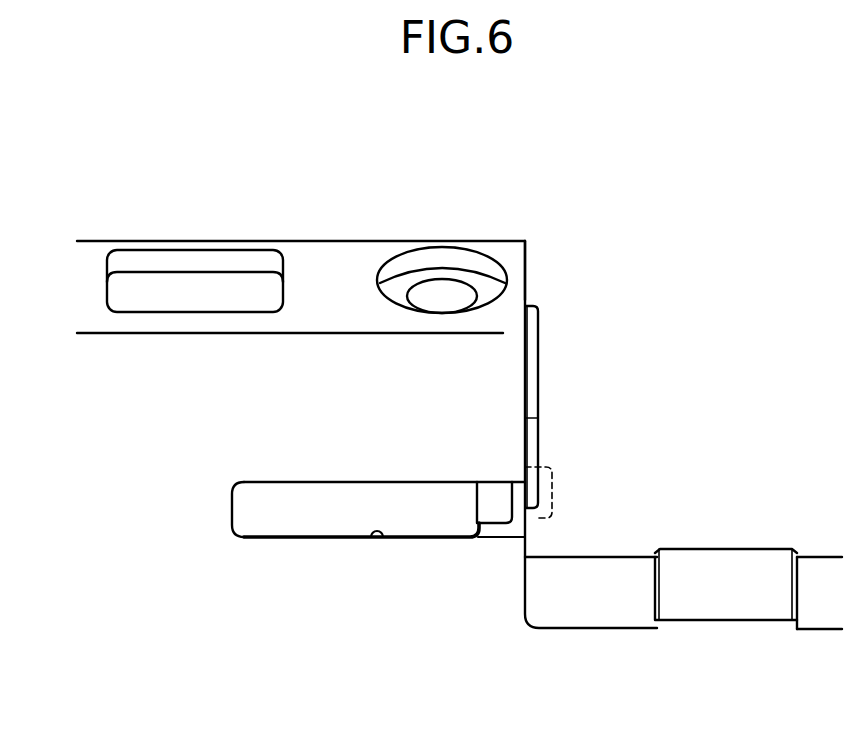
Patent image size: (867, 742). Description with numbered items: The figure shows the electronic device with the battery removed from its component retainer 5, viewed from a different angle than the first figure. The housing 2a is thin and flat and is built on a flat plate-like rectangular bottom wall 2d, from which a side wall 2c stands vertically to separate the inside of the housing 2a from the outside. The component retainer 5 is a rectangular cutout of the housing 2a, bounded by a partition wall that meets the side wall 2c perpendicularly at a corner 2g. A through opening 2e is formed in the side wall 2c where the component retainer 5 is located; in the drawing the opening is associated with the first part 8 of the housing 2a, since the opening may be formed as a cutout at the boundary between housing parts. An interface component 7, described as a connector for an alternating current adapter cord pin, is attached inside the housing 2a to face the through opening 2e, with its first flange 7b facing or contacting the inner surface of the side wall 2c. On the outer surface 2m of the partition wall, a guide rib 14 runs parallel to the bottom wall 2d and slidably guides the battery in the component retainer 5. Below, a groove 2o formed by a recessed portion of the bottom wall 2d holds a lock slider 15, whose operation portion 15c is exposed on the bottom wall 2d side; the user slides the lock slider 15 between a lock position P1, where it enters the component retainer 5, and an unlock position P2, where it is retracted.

The housing 2a is at (643, 222).
The side wall 2c is at (335, 262).
The through opening 2e is at (218, 262).
The corner 2g is at (527, 272).
The outer surface of partition wall 2m is at (527, 418).
The bottom wall 2d is at (695, 682).
The groove 2o is at (380, 545).
The component retainer 5 is at (720, 437).
The interface component 7 is at (427, 272).
The first flange 7b is at (451, 277).
The first part 8 is at (123, 239).
The guide rib 14 is at (533, 318).
The lock slider 15 is at (298, 480).
The operation portion 15c is at (280, 510).
The lock position P1 is at (552, 499).
The unlock position P2 is at (497, 525).